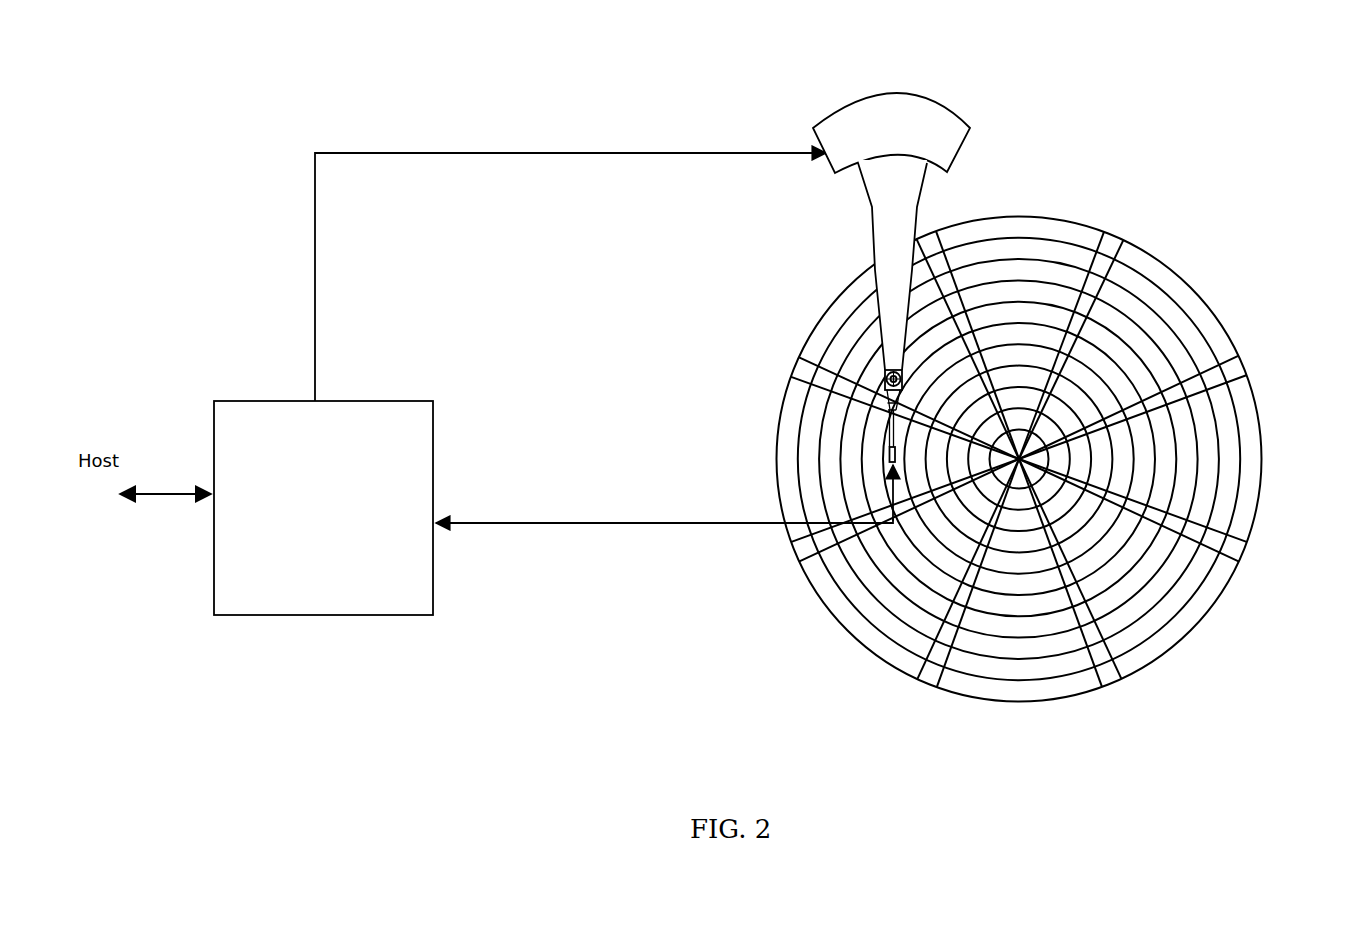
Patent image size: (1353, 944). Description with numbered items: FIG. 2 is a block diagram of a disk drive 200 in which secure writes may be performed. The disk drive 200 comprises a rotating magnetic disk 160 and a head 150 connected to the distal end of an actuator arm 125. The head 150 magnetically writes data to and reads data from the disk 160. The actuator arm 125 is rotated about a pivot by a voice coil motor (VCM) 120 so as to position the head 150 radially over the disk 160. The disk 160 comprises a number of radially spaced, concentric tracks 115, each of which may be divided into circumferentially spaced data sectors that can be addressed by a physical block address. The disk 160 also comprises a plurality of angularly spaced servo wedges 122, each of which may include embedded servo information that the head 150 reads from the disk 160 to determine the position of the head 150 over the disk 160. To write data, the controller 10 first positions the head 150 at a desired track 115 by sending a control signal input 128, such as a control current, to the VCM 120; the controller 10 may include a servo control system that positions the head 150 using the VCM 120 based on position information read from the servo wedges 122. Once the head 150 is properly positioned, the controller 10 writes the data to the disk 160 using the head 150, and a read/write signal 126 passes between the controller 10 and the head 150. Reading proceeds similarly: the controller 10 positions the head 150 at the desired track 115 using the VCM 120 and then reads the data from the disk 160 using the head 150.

The disk drive 200 is at (1254, 87).
The controller 10 is at (388, 401).
The control signal input 128 is at (314, 284).
The read/write signal 126 is at (529, 524).
The voice coil motor 120 is at (824, 163).
The actuator arm 125 is at (872, 245).
The head 150 is at (885, 464).
The rotating magnetic disk 160 is at (1184, 272).
The tracks 115 is at (1018, 248).
The servo wedges 122 is at (1116, 237).